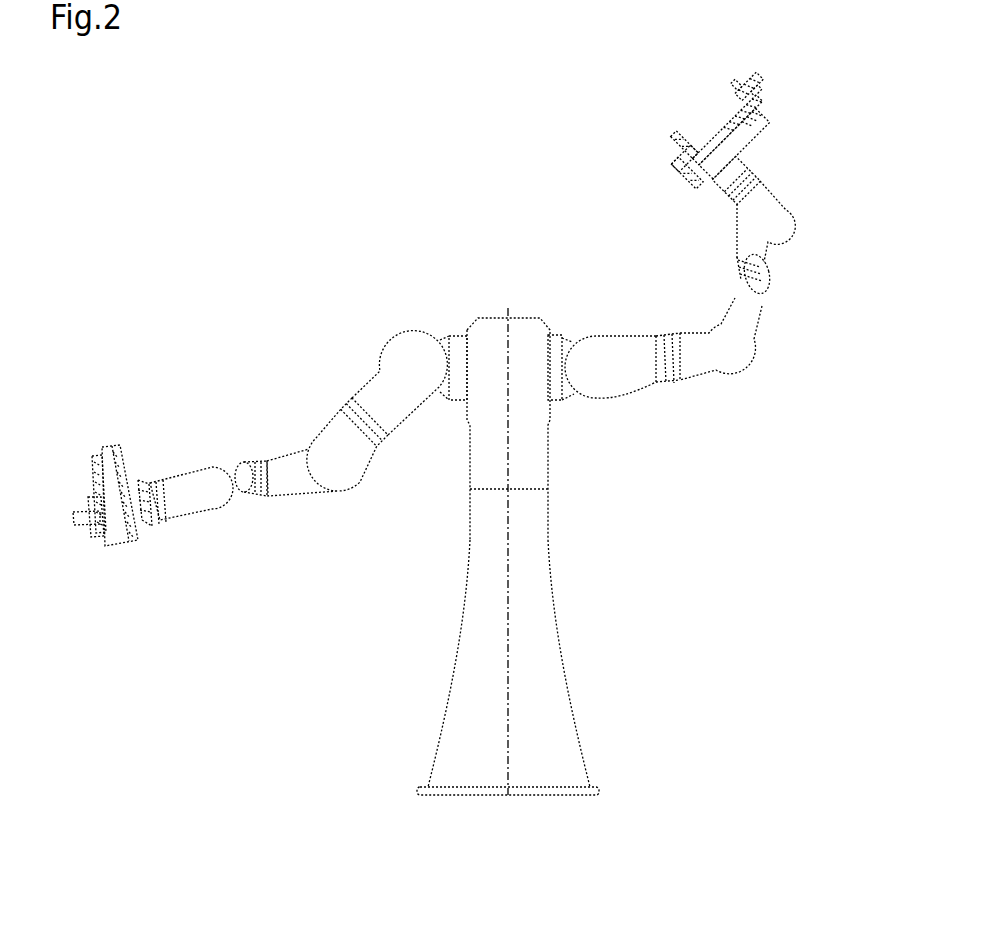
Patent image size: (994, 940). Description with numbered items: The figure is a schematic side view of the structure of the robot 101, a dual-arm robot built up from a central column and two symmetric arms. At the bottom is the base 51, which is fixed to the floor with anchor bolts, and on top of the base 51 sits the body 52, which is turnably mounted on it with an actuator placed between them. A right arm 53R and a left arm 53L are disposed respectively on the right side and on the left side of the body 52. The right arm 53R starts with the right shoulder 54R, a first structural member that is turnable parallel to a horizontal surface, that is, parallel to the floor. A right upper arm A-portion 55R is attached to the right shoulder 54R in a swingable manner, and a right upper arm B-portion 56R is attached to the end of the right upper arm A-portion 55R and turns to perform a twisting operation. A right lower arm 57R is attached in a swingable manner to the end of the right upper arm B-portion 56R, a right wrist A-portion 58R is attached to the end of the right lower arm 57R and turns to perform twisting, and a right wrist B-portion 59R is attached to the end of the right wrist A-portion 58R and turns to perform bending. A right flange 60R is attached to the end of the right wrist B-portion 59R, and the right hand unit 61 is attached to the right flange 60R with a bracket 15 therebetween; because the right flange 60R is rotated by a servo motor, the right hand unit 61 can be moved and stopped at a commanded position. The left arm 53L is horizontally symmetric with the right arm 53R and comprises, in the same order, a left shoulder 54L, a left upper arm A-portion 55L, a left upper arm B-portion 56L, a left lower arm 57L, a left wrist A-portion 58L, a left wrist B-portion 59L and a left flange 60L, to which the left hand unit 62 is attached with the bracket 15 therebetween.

The robot 101 is at (672, 657).
The base 51 is at (467, 733).
The body 52 is at (537, 450).
The right arm 53R is at (313, 518).
The left arm 53L is at (747, 382).
The right shoulder 54R is at (449, 342).
The left shoulder 54L is at (573, 342).
The right upper arm A-portion 55R is at (402, 348).
The left upper arm A-portion 55L is at (610, 350).
The right upper arm B-portion 56R is at (352, 422).
The left upper arm B-portion 56L is at (673, 345).
The right lower arm 57R is at (302, 472).
The left lower arm 57L is at (748, 320).
The right wrist A-portion 58R is at (253, 482).
The left wrist A-portion 58L is at (757, 270).
The right wrist B-portion 59R is at (190, 490).
The left wrist B-portion 59L is at (758, 215).
The right flange 60R is at (153, 493).
The left flange 60L is at (755, 175).
The right hand unit 61 is at (95, 437).
The left hand unit 62 is at (694, 119).
The bracket 15 is at (141, 498).